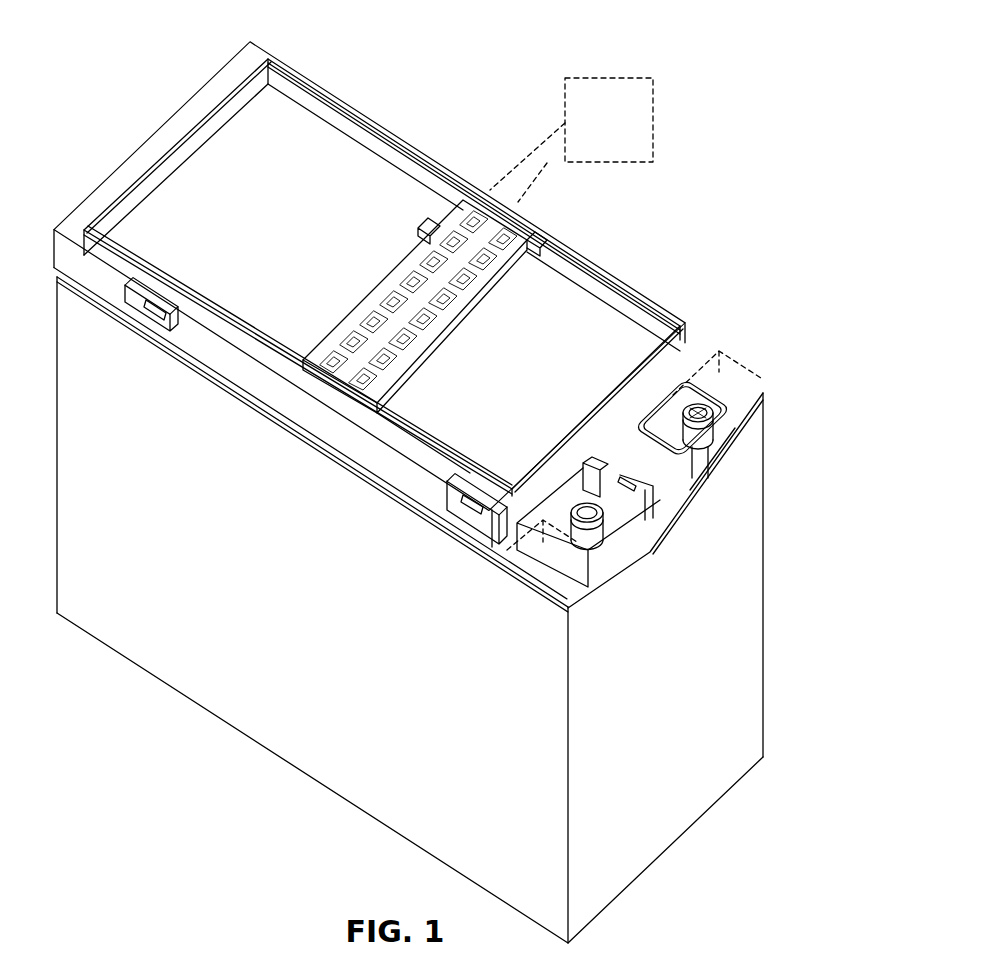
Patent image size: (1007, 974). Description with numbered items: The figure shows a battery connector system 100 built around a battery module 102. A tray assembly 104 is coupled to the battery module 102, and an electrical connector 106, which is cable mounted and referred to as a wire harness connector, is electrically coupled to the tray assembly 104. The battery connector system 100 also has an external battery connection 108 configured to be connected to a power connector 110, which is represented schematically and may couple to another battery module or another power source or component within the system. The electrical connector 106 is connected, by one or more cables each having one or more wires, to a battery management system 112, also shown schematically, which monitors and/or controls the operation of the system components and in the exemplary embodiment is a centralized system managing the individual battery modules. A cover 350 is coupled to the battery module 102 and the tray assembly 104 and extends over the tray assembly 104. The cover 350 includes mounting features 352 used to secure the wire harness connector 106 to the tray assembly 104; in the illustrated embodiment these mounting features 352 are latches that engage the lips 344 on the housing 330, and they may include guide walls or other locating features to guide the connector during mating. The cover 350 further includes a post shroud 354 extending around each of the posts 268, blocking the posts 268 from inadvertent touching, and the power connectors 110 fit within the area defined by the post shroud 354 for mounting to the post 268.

The battery connector system 100 is at (477, 108).
The battery module 102 is at (333, 693).
The tray assembly 104 is at (548, 572).
The electrical connector 106 is at (373, 292).
The external battery connection 108 is at (697, 412).
The power connector 110 is at (507, 555).
The battery management system 112 is at (610, 78).
The post 268 is at (702, 436).
The housing 330 is at (608, 286).
The lip 344 is at (444, 331).
The cover 350 is at (277, 144).
The mounting feature 352 is at (423, 233).
The post shroud 354 is at (752, 422).